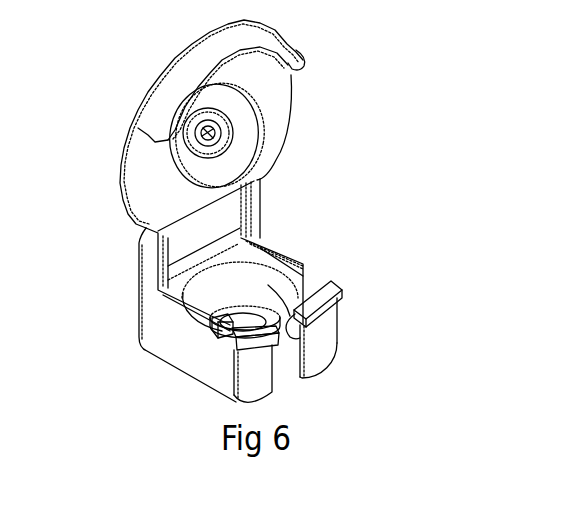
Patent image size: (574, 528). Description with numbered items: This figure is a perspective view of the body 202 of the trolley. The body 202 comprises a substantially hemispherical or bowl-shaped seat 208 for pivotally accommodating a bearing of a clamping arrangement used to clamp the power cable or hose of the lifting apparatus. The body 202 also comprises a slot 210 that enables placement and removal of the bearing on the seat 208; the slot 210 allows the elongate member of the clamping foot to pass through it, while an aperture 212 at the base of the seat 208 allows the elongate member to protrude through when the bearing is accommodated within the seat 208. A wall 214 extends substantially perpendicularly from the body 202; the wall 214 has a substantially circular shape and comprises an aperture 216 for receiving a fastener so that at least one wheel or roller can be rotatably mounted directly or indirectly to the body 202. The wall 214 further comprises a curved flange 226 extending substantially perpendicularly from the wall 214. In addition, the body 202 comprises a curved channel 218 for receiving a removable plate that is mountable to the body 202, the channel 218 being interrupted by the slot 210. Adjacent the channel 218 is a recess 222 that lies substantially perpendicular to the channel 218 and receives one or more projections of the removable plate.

The body 202 is at (168, 342).
The seat 208 is at (263, 290).
The slot 210 is at (283, 387).
The aperture 212 is at (238, 322).
The wall 214 is at (138, 178).
The aperture 216 is at (212, 132).
The channel 218 is at (225, 337).
The recess 222 is at (300, 337).
The curved flange 226 is at (300, 61).